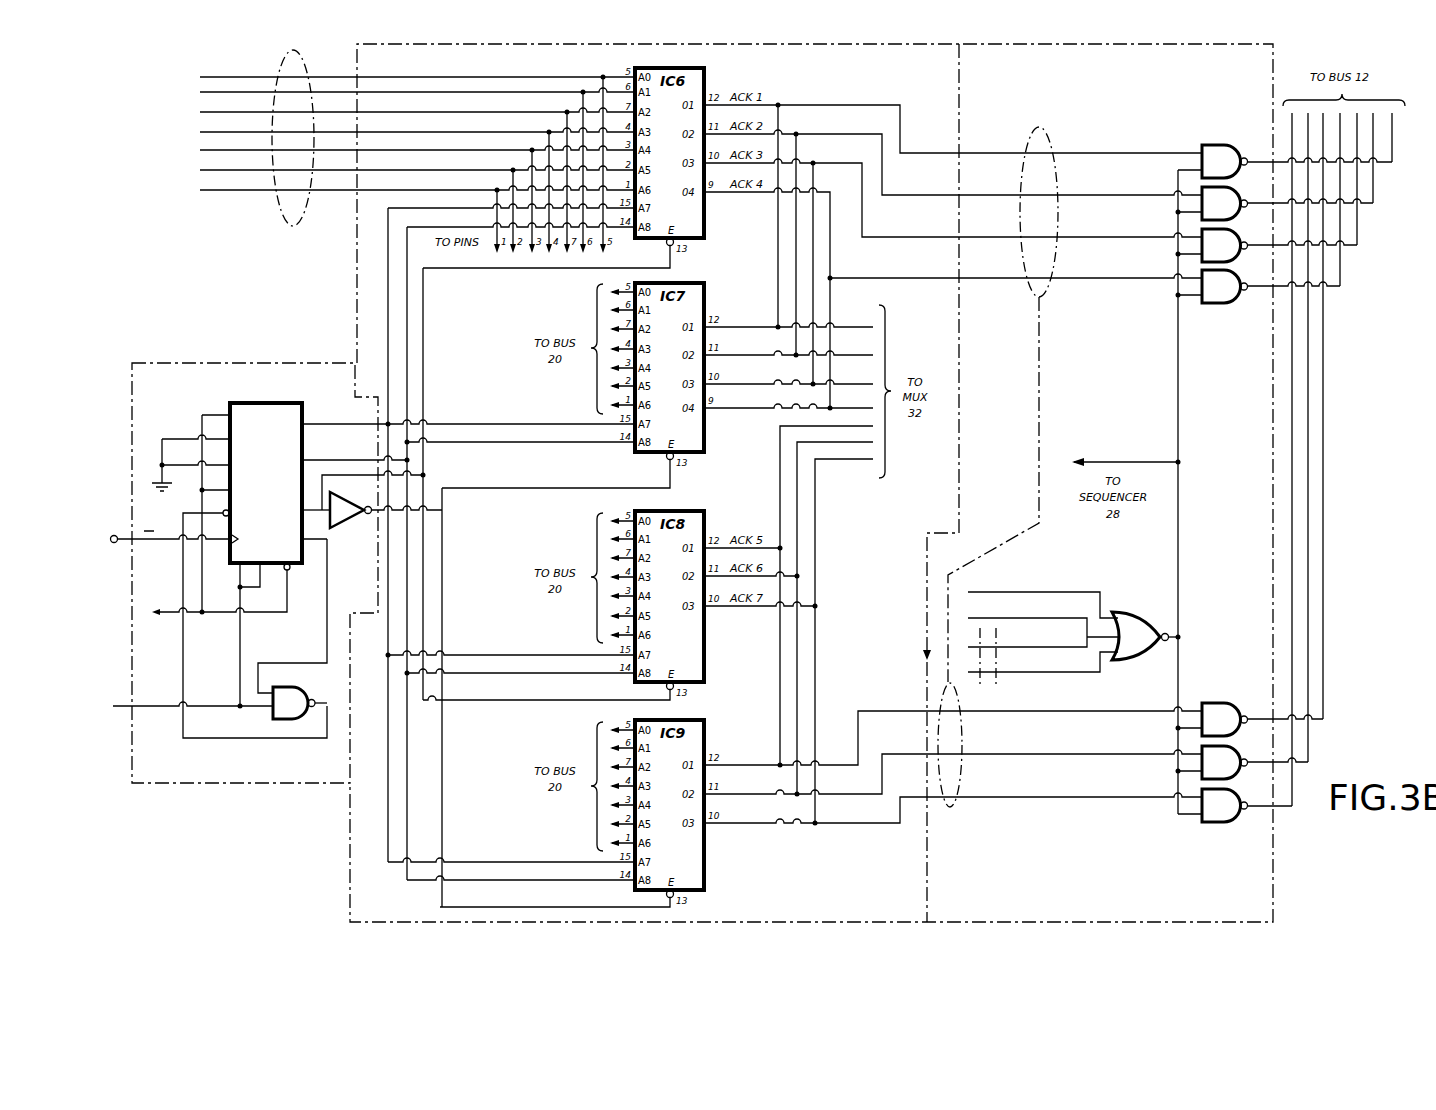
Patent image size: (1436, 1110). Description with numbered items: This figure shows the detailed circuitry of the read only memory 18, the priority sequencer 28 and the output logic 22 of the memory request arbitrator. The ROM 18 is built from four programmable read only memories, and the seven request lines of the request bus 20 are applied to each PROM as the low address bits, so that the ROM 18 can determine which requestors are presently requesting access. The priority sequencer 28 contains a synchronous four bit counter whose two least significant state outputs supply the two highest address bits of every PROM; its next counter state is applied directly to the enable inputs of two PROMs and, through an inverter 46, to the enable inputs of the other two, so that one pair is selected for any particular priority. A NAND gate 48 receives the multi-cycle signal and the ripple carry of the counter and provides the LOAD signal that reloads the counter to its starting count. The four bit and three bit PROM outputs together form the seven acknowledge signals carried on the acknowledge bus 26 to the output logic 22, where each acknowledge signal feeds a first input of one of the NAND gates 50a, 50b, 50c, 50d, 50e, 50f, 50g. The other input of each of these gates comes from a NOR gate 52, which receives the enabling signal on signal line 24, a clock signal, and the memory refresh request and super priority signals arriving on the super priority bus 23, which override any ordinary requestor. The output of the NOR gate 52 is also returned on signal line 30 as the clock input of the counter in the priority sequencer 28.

The read only memory 18 is at (349, 879).
The request bus 20 is at (290, 228).
The output logic 22 is at (1275, 866).
The super priority bus 23 is at (980, 636).
The signal line 24 is at (1008, 592).
The acknowledge bus 26 is at (1041, 420).
The priority sequencer 28 is at (236, 591).
The signal line 30 is at (1148, 468).
The inverter 46 is at (345, 523).
The NAND gate 48 is at (304, 695).
The NAND gate 50a is at (1232, 149).
The NAND gate 50b is at (1234, 192).
The NAND gate 50c is at (1236, 235).
The NAND gate 50d is at (1222, 304).
The NAND gate 50e is at (1228, 705).
The NAND gate 50f is at (1234, 752).
The NAND gate 50g is at (1222, 823).
The NOR gate 52 is at (1132, 612).